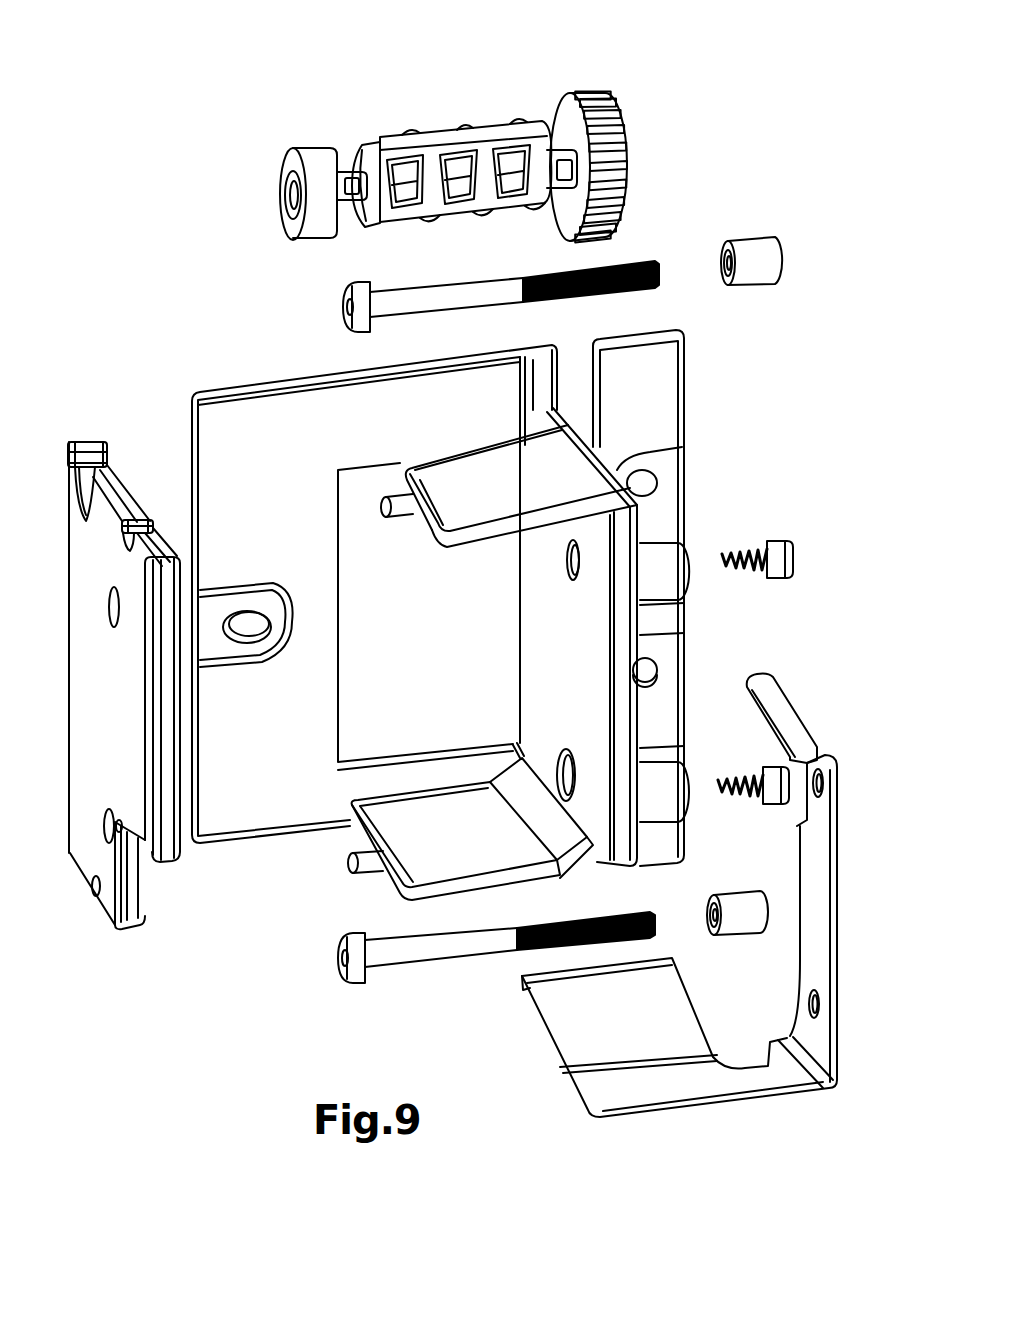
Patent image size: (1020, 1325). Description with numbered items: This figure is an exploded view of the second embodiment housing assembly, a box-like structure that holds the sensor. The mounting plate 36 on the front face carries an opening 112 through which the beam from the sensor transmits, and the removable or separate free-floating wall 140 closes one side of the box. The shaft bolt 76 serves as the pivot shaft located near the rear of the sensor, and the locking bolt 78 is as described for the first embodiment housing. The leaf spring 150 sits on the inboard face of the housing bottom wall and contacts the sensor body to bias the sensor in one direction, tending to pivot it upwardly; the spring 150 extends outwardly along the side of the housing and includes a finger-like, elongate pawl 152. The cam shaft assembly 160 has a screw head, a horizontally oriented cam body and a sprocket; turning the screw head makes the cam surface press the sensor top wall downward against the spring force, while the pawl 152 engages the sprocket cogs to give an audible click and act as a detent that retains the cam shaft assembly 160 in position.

The cam shaft assembly 160 is at (418, 120).
The locking bolt 78 is at (477, 298).
The shaft bolt 76 is at (422, 950).
The mounting plate 36 is at (332, 375).
The opening 112 is at (365, 493).
The free-floating wall 140 is at (98, 790).
The leaf spring 150 is at (647, 1028).
The pawl 152 is at (773, 698).